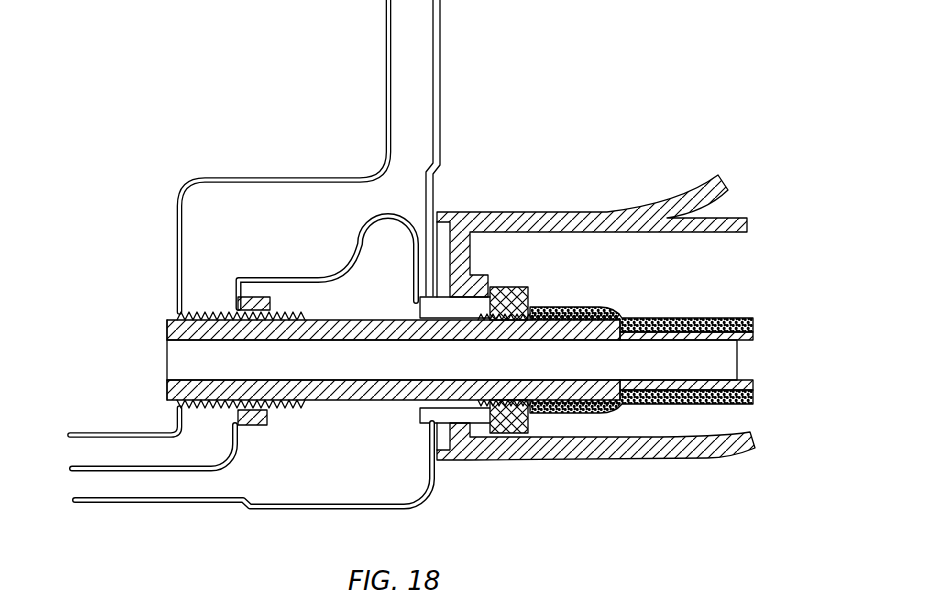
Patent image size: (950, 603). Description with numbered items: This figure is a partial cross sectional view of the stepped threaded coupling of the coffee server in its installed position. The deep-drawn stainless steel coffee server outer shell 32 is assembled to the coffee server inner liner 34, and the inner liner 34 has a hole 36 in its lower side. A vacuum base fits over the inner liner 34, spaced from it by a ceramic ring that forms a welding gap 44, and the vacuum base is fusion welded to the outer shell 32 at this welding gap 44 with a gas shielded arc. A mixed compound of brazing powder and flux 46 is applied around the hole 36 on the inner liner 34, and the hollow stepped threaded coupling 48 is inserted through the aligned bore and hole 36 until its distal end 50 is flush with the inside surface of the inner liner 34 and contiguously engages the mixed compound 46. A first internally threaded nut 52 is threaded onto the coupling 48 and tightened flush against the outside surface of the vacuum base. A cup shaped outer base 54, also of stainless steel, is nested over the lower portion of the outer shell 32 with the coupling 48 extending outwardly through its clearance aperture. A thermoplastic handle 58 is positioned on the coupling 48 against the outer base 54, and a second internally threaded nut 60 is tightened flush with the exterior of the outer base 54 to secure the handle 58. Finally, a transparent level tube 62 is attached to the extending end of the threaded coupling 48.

The coffee server outer shell 32 is at (444, 67).
The coffee server inner liner 34 is at (202, 177).
The hole 36 is at (173, 313).
The welding gap 44 is at (415, 305).
The mixed compound of brazing powder and flux 46 is at (183, 306).
The hollow stepped threaded coupling 48 is at (737, 363).
The distal end 50 is at (165, 360).
The first internally threaded nut 52 is at (257, 427).
The cup shaped outer base 54 is at (412, 500).
The handle 58 is at (597, 212).
The second internally threaded nut 60 is at (520, 433).
The transparent level tube 62 is at (693, 316).